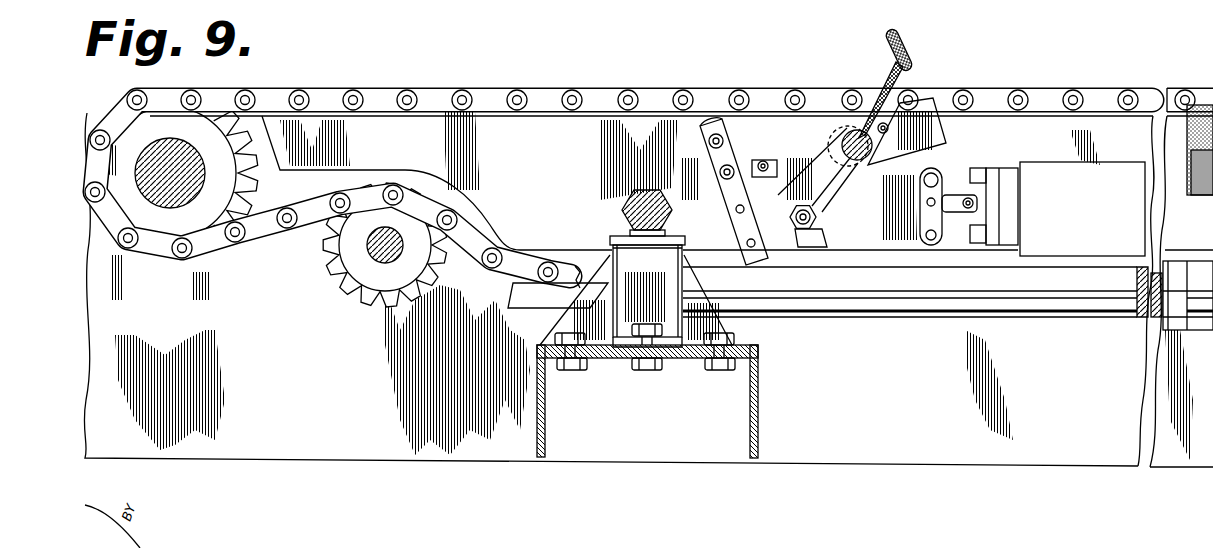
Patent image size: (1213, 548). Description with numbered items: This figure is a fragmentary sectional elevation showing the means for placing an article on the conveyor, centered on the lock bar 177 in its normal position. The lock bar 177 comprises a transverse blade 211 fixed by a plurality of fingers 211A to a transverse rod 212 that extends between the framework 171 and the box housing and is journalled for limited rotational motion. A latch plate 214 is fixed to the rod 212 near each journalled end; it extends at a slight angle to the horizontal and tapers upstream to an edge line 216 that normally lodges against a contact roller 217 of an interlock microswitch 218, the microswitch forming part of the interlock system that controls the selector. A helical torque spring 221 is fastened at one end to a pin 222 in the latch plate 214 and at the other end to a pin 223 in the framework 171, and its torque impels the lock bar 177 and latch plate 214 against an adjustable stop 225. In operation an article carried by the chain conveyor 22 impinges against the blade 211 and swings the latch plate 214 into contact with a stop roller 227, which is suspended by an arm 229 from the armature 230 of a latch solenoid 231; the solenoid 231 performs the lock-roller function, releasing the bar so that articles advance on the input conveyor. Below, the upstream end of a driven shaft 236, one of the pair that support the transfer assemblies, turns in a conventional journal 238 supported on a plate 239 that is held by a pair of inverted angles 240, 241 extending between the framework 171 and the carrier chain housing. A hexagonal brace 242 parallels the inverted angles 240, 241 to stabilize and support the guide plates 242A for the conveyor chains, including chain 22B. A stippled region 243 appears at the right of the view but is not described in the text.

The framework 171 is at (372, 432).
The chain conveyor 22 is at (649, 164).
The chain 22B is at (640, 88).
The guide plates 242A is at (552, 141).
The hexagonal brace 242 is at (620, 208).
The plate 239 is at (547, 346).
The journal 238 is at (673, 358).
The inverted angle 240 is at (535, 432).
The inverted angle 241 is at (758, 420).
The driven shaft 236 is at (917, 300).
The latch solenoid 231 is at (1095, 217).
The arm 229 is at (957, 245).
The armature 230 is at (987, 223).
The stop roller 227 is at (943, 173).
The interlock microswitch 218 is at (738, 226).
The contact roller 217 is at (773, 167).
The edge line 216 is at (780, 160).
The transverse rod 212 is at (850, 160).
The pin 222 is at (817, 220).
The adjustable stop 225 is at (828, 234).
The latch plate 214 is at (950, 130).
The pin 223 is at (883, 133).
The helical torque spring 221 is at (868, 128).
The transverse blade 211 is at (913, 70).
The fingers 211A is at (912, 78).
The lock bar 177 is at (912, 44).
The stippled region 243 is at (1204, 108).